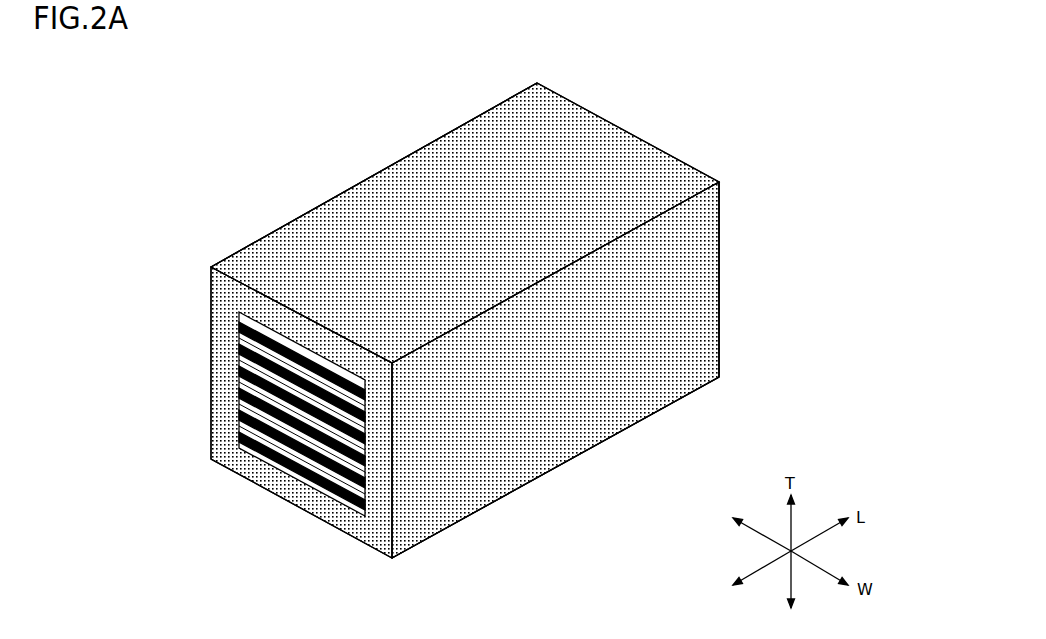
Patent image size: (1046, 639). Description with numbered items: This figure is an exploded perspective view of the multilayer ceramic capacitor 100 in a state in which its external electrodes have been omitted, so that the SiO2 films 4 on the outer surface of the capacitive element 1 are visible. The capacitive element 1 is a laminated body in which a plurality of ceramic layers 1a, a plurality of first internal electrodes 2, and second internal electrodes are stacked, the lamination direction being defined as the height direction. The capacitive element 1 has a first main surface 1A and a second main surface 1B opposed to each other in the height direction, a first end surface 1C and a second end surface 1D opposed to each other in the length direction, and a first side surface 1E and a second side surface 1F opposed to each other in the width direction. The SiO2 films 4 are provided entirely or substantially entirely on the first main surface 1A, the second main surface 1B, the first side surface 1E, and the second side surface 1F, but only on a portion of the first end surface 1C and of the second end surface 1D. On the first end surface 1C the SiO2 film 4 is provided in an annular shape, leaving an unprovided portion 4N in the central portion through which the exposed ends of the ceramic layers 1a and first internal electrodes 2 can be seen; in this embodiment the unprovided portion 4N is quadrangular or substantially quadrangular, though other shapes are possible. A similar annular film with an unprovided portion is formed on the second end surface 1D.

The multilayer ceramic capacitor 100 is at (100, 68).
The capacitive element 1 is at (237, 339).
The first main surface 1A is at (557, 476).
The second main surface 1B is at (427, 214).
The first end surface 1C is at (287, 422).
The second end surface 1D is at (730, 261).
The first side surface 1E is at (367, 174).
The second side surface 1F is at (563, 374).
The ceramic layers 1a is at (238, 404).
The first internal electrodes 2 is at (238, 388).
The SiO2 films 4 is at (284, 262).
The unprovided portion 4N is at (287, 441).